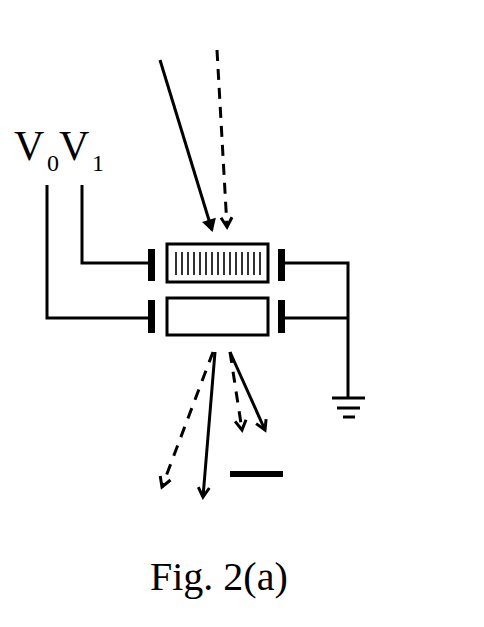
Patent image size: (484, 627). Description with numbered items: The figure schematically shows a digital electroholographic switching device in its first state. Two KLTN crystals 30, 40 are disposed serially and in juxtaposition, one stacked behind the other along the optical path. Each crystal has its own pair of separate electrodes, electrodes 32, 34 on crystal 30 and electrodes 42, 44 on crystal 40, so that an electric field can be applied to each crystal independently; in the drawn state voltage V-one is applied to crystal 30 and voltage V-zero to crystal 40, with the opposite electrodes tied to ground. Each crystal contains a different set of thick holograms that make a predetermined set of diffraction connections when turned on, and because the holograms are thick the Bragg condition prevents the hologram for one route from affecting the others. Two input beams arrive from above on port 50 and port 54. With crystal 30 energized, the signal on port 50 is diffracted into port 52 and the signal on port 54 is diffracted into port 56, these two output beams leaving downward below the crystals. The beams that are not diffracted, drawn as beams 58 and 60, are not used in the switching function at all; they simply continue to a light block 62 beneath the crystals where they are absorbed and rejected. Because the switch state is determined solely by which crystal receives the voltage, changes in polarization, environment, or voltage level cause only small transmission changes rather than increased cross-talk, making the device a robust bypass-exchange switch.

The KLTN crystal 30 is at (248, 233).
The electrode 32 is at (138, 248).
The electrode 34 is at (290, 252).
The KLTN crystal 40 is at (183, 338).
The electrode 42 is at (145, 327).
The electrode 44 is at (291, 323).
The port 50 is at (172, 128).
The port 52 is at (201, 442).
The port 54 is at (217, 122).
The port 56 is at (177, 440).
The blocked beam 58 is at (255, 407).
The blocked deflected beam 60 is at (236, 407).
The light block 62 is at (257, 483).